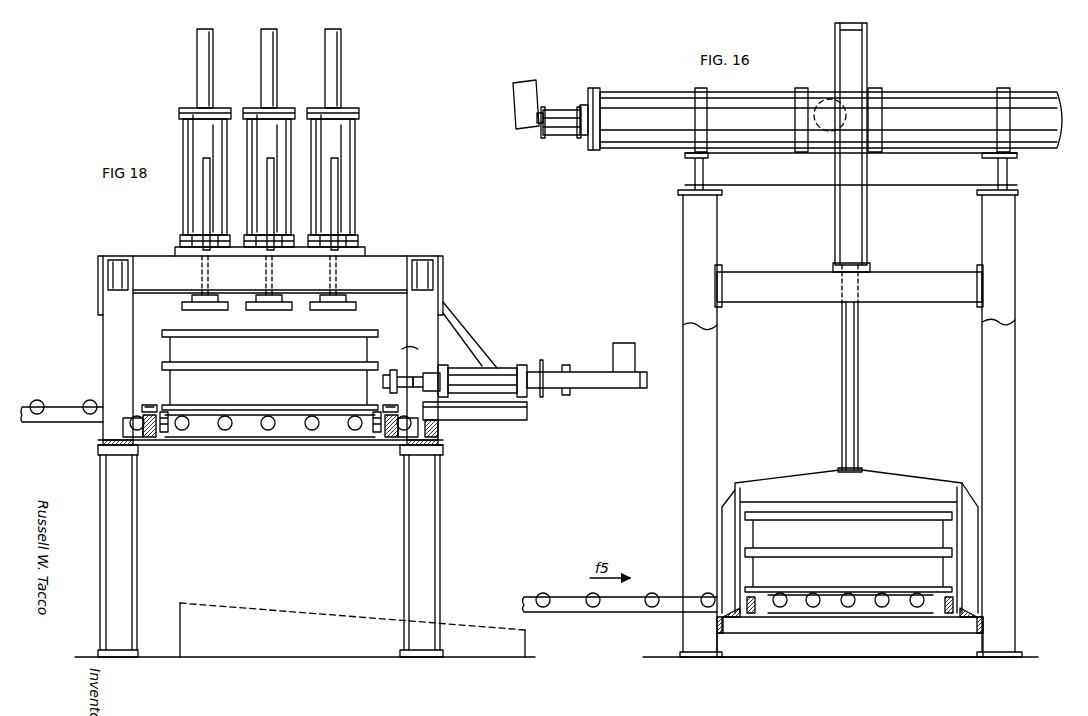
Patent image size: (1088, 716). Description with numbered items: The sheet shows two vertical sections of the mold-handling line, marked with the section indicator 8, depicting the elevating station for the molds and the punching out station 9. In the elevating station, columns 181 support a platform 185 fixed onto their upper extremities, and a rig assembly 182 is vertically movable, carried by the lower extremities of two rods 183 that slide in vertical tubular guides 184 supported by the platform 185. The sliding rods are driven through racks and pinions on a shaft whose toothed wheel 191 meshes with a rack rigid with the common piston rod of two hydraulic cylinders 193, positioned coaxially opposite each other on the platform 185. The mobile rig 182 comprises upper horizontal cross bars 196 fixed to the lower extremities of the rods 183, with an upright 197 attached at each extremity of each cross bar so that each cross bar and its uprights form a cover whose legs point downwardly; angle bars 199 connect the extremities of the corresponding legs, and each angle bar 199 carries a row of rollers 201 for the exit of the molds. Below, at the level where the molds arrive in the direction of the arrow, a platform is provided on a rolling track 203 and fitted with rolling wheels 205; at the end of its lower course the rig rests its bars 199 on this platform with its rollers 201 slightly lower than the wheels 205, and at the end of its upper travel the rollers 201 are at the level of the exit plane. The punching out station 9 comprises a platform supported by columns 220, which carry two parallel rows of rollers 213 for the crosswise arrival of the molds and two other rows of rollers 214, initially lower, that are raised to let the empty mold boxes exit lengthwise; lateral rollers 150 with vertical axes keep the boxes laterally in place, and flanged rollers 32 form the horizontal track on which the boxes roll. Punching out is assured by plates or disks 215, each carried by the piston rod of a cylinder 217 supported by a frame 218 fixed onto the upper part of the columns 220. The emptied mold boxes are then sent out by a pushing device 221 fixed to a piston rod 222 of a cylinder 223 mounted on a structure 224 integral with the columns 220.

In FIG. 18, the cylinder 217 is at (188, 142).
In FIG. 18, the plate or disk 215 is at (252, 310).
In FIG. 18, the frame 218 is at (383, 286).
In FIG. 18, the exit rollers 214 is at (266, 430).
In FIG. 18, the entry rollers 213 is at (170, 440).
In FIG. 18, the lateral rollers 150 is at (150, 408).
In FIG. 18, the columns 220 is at (125, 590).
In FIG. 18, the structure 224 is at (283, 603).
In FIG. 18, the flanged rollers 32 is at (38, 400).
In FIG. 18, the piston rod 222 is at (418, 372).
In FIG. 18, the pushing device 221 is at (393, 370).
In FIG. 18, the cylinder 223 is at (540, 369).
In FIG. 18, the punching out station 9 is at (421, 208).
In FIG. 16, the hydraulic cylinders 193 is at (651, 100).
In FIG. 16, the toothed wheel 191 is at (825, 95).
In FIG. 16, the vertical tubular guides 184 is at (864, 226).
In FIG. 16, the platform 185 is at (777, 190).
In FIG. 16, the columns 181 is at (708, 357).
In FIG. 16, the press 8 is at (1021, 283).
In FIG. 16, the rods 183 is at (858, 362).
In FIG. 16, the rig assembly 182 is at (848, 535).
In FIG. 16, the upper horizontal cross bars 196 is at (795, 482).
In FIG. 16, the upright 197 is at (730, 495).
In FIG. 16, the rolling wheels 205 is at (880, 608).
In FIG. 16, the rollers 201 is at (752, 615).
In FIG. 16, the angle bars 199 is at (742, 617).
In FIG. 16, the rolling track 203 is at (580, 600).